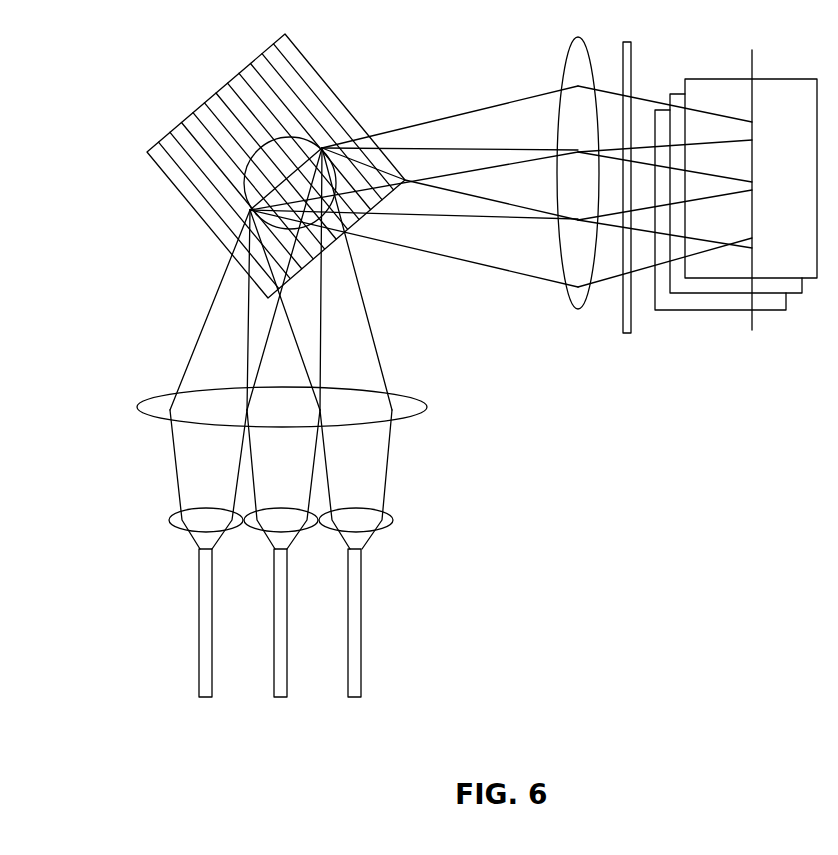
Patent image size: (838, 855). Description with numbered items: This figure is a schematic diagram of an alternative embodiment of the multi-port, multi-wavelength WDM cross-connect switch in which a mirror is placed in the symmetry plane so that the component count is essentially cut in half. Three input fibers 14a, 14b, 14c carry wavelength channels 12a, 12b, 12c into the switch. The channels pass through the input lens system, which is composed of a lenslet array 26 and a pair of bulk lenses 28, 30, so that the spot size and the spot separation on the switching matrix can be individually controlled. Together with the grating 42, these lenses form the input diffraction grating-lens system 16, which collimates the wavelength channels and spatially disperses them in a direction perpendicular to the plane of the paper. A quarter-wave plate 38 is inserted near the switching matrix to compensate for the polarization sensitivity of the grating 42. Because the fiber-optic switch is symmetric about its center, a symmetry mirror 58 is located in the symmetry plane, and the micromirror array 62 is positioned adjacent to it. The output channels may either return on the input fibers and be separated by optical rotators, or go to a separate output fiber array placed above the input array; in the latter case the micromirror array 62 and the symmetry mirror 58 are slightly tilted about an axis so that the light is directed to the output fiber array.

The diffraction grating-lens system 16 is at (162, 88).
The grating 42 is at (248, 63).
The bulk lens 30 is at (568, 52).
The quarter-wave plate 38 is at (632, 67).
The symmetry mirror 58 is at (753, 65).
The micromirror array 62 is at (737, 358).
The bulk lens 28 is at (150, 395).
The lenslet array 26 is at (158, 548).
The wavelength channel 12a is at (155, 495).
The wavelength channel 12b is at (302, 468).
The wavelength channel 12c is at (405, 481).
The input fiber 14a is at (202, 698).
The input fiber 14b is at (277, 699).
The input fiber 14c is at (353, 699).